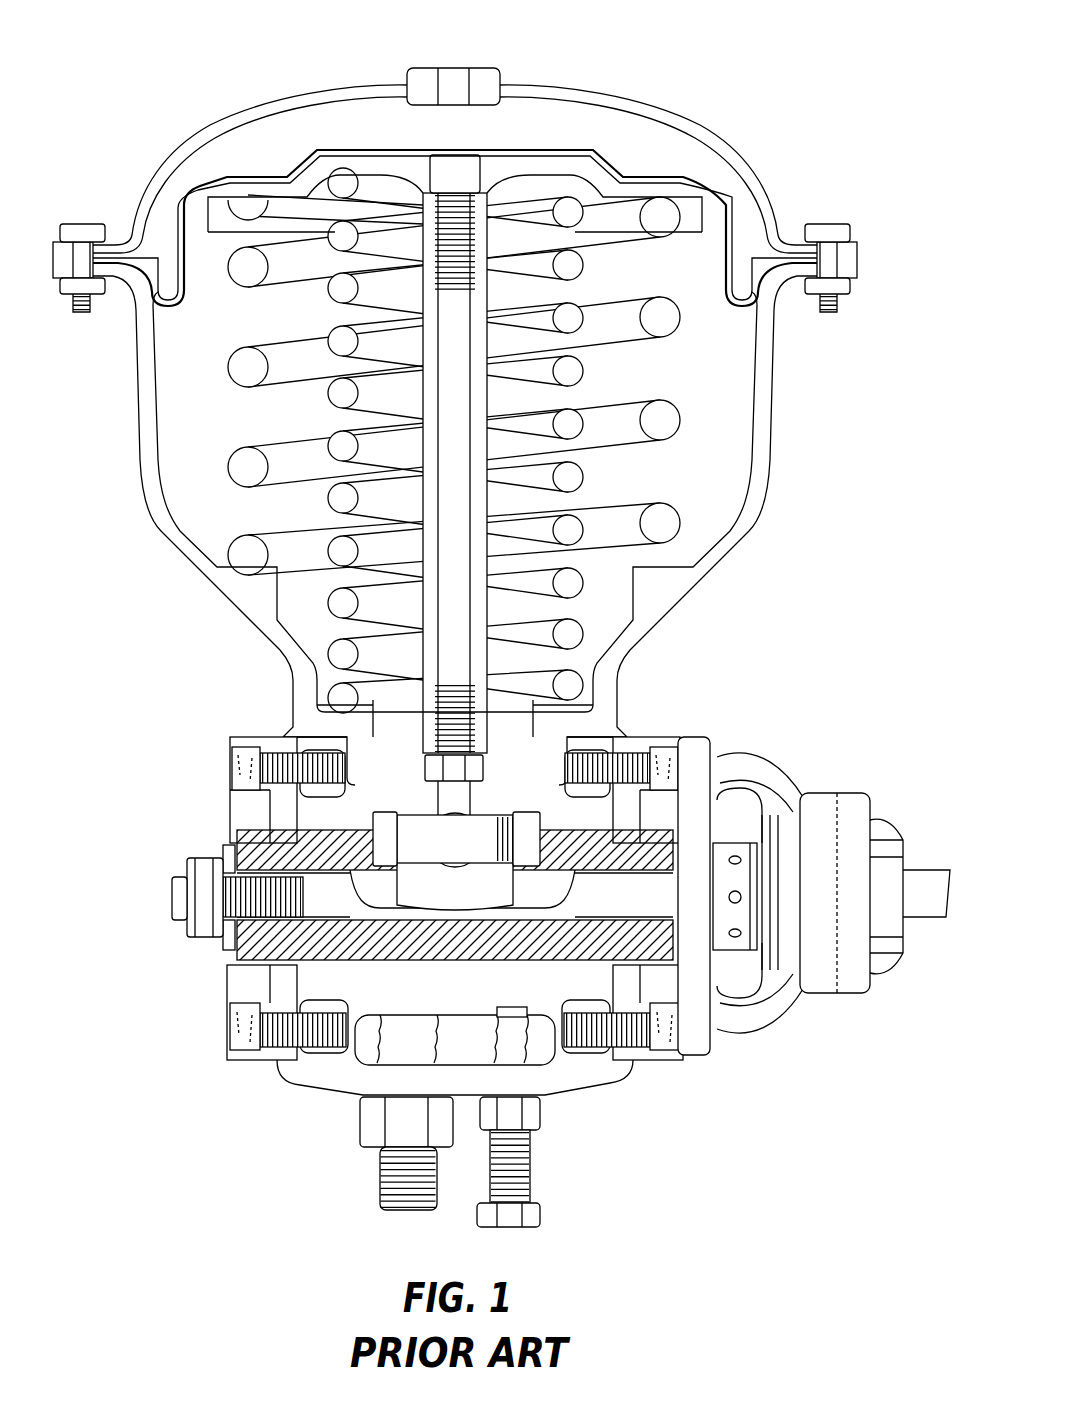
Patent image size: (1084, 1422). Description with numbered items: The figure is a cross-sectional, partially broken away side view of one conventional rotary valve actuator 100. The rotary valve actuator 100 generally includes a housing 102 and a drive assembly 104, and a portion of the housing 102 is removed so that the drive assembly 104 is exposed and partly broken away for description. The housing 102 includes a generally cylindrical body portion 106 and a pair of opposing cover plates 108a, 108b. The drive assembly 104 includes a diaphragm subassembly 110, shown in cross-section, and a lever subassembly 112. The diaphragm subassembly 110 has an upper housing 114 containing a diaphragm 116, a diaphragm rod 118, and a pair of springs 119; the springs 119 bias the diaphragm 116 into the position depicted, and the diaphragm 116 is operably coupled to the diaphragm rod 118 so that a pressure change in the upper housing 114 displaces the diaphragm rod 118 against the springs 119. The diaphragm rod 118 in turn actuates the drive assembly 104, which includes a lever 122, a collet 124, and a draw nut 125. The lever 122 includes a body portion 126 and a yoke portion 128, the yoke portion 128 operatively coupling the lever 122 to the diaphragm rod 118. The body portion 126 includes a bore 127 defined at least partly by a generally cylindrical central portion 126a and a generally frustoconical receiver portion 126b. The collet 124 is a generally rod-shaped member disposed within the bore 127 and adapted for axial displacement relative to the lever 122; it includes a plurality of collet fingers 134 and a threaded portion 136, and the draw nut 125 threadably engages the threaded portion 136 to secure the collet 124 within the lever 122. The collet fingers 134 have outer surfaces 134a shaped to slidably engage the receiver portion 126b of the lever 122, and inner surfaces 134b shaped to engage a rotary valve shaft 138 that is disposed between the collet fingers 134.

The rotary valve actuator 100 is at (482, 234).
The housing 102 is at (240, 732).
The drive assembly 104 is at (523, 750).
The body portion 106 is at (330, 815).
The cover plate 108a is at (228, 979).
The cover plate 108b is at (657, 1060).
The diaphragm subassembly 110 is at (778, 378).
The lever subassembly 112 is at (336, 968).
The upper housing 114 is at (722, 548).
The diaphragm 116 is at (517, 143).
The diaphragm rod 118 is at (430, 385).
The springs 119 is at (568, 480).
The lever 122 is at (436, 940).
The collet 124 is at (457, 912).
The draw nut 125 is at (200, 862).
The body portion 126 is at (741, 930).
The central portion 126a is at (532, 950).
The receiver portion 126b is at (665, 915).
The bore 127 is at (327, 923).
The yoke portion 128 is at (410, 815).
The collet fingers 134 is at (655, 940).
The outer surfaces 134a is at (655, 900).
The inner surfaces 134b is at (570, 840).
The threaded portion 136 is at (240, 905).
The rotary valve shaft 138 is at (713, 1028).